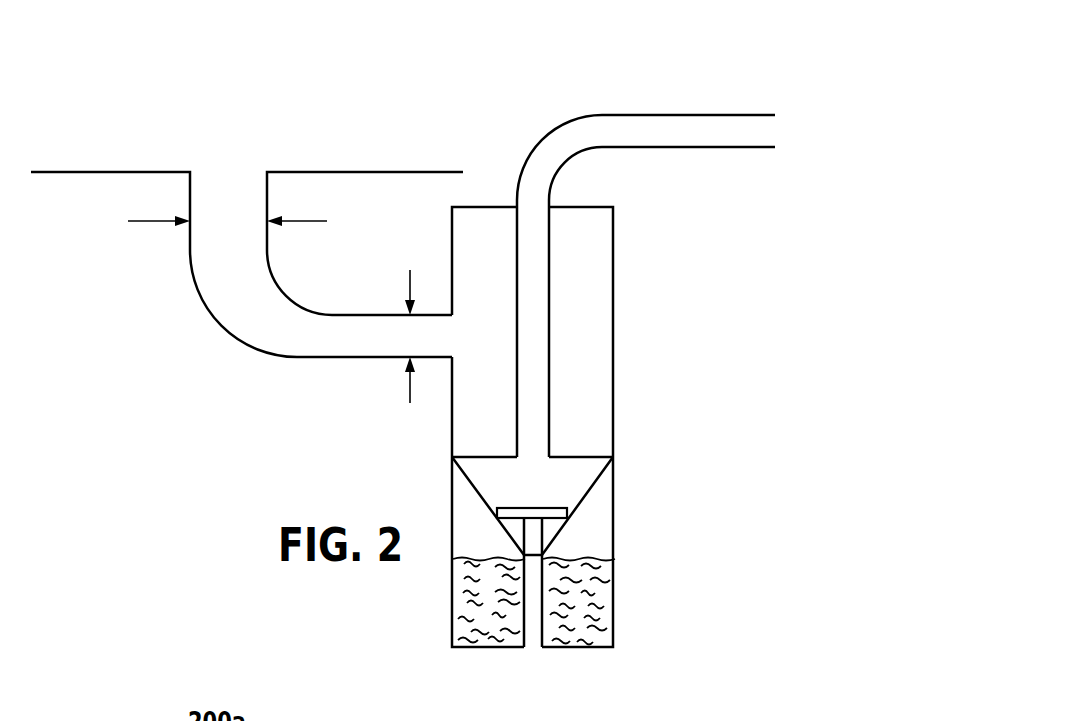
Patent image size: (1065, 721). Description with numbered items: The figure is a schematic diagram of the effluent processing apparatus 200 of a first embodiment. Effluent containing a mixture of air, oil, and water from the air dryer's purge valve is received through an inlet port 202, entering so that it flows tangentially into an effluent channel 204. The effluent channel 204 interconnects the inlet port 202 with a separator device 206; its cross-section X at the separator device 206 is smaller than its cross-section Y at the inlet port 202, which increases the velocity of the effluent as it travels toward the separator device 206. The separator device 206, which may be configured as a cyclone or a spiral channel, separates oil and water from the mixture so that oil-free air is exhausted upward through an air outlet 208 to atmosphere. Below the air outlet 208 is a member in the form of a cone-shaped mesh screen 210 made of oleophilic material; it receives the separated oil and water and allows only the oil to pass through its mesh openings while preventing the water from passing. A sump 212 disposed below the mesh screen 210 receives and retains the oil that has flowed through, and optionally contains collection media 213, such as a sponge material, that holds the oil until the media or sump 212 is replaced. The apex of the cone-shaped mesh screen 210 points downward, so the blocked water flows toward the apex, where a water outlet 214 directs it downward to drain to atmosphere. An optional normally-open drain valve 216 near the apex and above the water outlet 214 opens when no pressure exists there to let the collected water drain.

The effluent processing apparatus 200 is at (512, 114).
The inlet port 202 is at (233, 170).
The effluent channel 204 is at (290, 325).
The separator device 206 is at (613, 279).
The air outlet 208 is at (653, 132).
The mesh screen 210 is at (582, 498).
The sump 212 is at (613, 585).
The collection media 213 is at (582, 610).
The water outlet 214 is at (532, 649).
The drain valve 216 is at (555, 503).